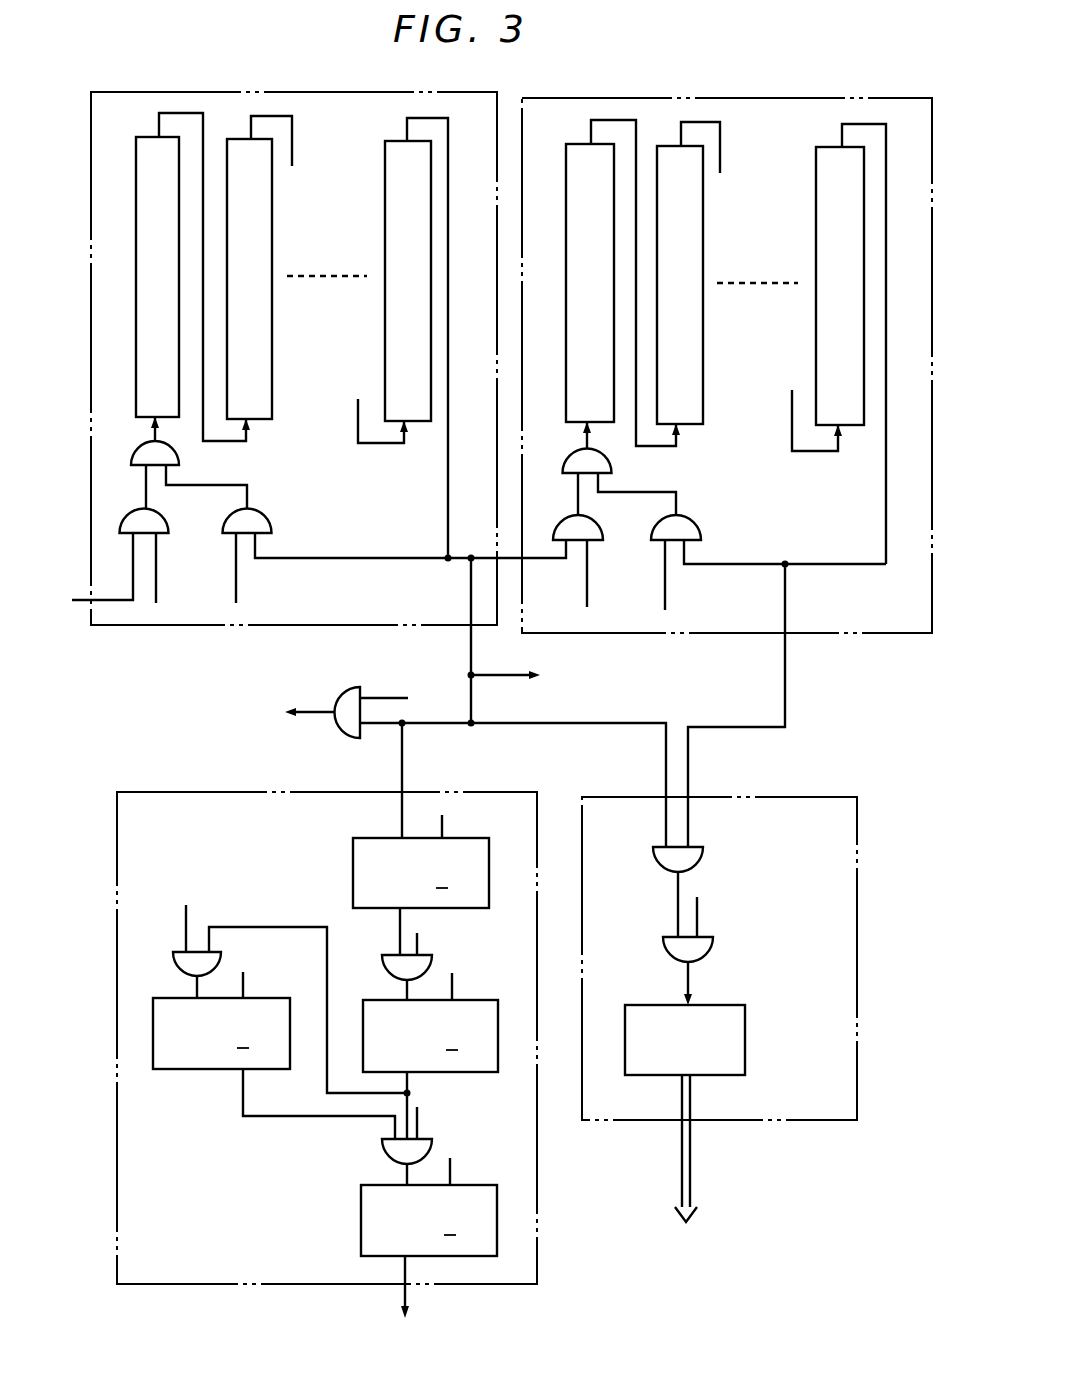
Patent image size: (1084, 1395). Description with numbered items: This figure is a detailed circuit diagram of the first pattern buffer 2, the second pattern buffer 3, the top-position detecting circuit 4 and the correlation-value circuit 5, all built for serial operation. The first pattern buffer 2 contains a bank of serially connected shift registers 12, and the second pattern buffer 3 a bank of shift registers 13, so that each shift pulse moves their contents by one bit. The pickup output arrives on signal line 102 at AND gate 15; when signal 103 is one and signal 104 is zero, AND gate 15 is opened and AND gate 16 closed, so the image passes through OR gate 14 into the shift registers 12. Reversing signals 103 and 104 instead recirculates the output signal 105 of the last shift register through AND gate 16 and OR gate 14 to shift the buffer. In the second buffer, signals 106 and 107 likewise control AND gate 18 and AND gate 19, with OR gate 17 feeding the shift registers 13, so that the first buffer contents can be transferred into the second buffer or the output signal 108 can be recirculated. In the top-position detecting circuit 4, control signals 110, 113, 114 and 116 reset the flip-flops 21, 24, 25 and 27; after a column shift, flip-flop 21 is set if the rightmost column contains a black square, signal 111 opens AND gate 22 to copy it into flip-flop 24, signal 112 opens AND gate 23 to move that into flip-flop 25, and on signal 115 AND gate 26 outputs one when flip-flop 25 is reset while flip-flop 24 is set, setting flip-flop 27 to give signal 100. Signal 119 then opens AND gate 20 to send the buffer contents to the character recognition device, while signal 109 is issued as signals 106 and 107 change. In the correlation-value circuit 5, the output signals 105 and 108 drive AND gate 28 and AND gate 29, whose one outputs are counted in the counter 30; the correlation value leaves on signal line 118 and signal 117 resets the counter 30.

The first pattern buffer 2 is at (193, 90).
The second pattern buffer 3 is at (837, 100).
The top-position detecting circuit 4 is at (200, 790).
The correlation-value circuit 5 is at (790, 797).
The shift registers 12 is at (136, 182).
The shift registers 13 is at (703, 222).
The OR gate 14 is at (179, 458).
The AND gate 15 is at (163, 516).
The AND gate 16 is at (266, 516).
The OR gate 17 is at (612, 465).
The AND gate 18 is at (593, 522).
The AND gate 19 is at (696, 522).
The AND gate 20 is at (340, 690).
The flip-flop 21 is at (489, 855).
The AND gate 22 is at (383, 958).
The AND gate 23 is at (173, 963).
The flip-flop 24 is at (473, 1072).
The flip-flop 25 is at (212, 1072).
The AND gate 26 is at (382, 1151).
The flip-flop 27 is at (361, 1208).
The AND gate 28 is at (703, 856).
The AND gate 29 is at (713, 949).
The counter 30 is at (747, 1018).
The signal 100 is at (412, 1305).
The signal line 102 is at (72, 600).
The signal 103 is at (157, 580).
The signal 104 is at (237, 580).
The output signal 105 is at (318, 558).
The signal 106 is at (588, 588).
The signal 107 is at (667, 588).
The output signal 108 is at (747, 564).
The signal 109 is at (507, 675).
The control signal 110 is at (444, 823).
The signal 111 is at (419, 941).
The signal 112 is at (185, 921).
The control signal 113 is at (454, 983).
The control signal 114 is at (245, 980).
The signal 115 is at (419, 1113).
The control signal 116 is at (452, 1164).
The signal 117 is at (700, 909).
The signal line 118 is at (691, 1186).
The signal 119 is at (383, 698).